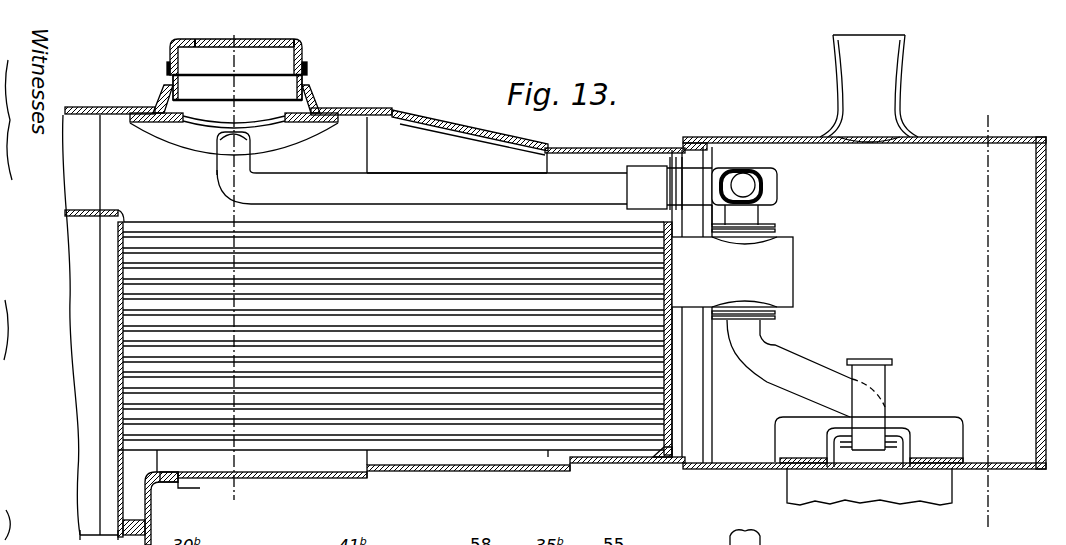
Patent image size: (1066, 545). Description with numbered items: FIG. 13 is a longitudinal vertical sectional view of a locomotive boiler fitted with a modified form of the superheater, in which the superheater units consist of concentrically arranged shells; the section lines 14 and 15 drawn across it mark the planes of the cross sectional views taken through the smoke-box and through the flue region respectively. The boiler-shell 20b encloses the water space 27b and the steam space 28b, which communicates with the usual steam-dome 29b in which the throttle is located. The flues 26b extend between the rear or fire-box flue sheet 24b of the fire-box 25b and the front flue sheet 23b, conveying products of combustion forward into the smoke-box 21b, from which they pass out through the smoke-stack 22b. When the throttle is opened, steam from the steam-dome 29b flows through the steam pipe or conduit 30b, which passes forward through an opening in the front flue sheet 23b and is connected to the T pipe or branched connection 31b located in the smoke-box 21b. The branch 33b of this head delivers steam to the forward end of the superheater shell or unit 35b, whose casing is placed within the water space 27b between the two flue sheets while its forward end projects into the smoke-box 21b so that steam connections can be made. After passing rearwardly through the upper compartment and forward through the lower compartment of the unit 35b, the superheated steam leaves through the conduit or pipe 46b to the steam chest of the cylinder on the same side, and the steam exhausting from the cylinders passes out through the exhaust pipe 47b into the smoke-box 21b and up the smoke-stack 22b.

The section line 14— 14 is at (981, 111).
The section line 15— 15 is at (228, 35).
The boiler-shell 20b is at (598, 137).
The smoke-box 21b is at (859, 303).
The smoke-stack 22b is at (869, 88).
The front flue sheet 23b is at (657, 455).
The rear or fire-box flue sheet 24b is at (118, 497).
The fire-box 25b is at (78, 340).
The flues 26b is at (455, 427).
The water space 27b is at (415, 496).
The steam space 28b is at (364, 327).
The steam-dome 29b is at (178, 56).
The steam pipe or conduit 30b is at (464, 171).
The T pipe or branched connection 31b is at (760, 182).
The branch 33b is at (752, 217).
The superheater shell or unit 35b is at (732, 278).
The conduit or pipe 46b is at (820, 347).
The exhaust pipe 47b is at (880, 373).